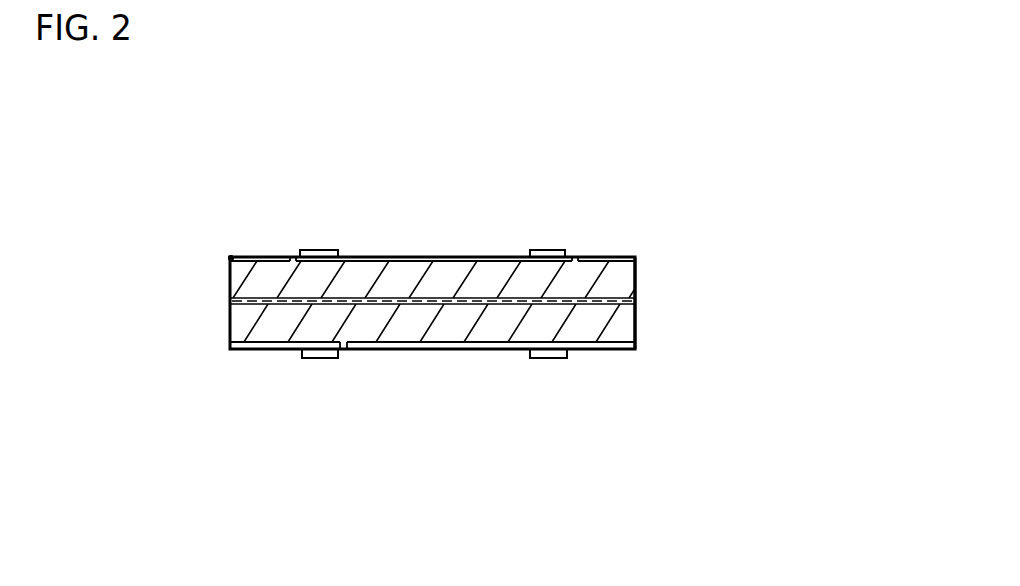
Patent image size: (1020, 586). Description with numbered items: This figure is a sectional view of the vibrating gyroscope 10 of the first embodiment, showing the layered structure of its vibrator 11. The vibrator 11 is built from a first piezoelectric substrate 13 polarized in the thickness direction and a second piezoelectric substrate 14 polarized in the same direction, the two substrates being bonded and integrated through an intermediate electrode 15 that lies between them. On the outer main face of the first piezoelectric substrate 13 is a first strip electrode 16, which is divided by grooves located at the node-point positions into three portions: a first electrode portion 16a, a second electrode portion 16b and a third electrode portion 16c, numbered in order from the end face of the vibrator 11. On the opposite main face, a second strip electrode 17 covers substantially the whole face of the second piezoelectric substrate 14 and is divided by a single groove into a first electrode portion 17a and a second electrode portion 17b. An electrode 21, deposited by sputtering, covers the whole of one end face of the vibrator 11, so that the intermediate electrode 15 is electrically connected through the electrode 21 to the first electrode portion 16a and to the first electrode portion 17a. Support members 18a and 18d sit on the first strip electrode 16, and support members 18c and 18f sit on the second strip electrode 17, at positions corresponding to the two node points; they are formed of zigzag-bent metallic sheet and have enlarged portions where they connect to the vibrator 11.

The vibrating gyroscope 10 is at (564, 187).
The vibrator 11 is at (636, 331).
The first piezoelectric substrate 13 is at (230, 257).
The second piezoelectric substrate 14 is at (230, 337).
The intermediate electrode 15 is at (230, 302).
The first strip electrode 16 is at (132, 172).
The first electrode portion 16a is at (271, 257).
The second electrode portion 16b is at (410, 257).
The third electrode portion 16c is at (600, 257).
The second strip electrode 17 is at (132, 432).
The first electrode portion 17a is at (270, 350).
The second electrode portion 17b is at (443, 351).
The support member 18a is at (317, 250).
The support member 18c is at (325, 358).
The support member 18d is at (547, 250).
The support member 18f is at (550, 358).
The electrode 21 is at (230, 285).